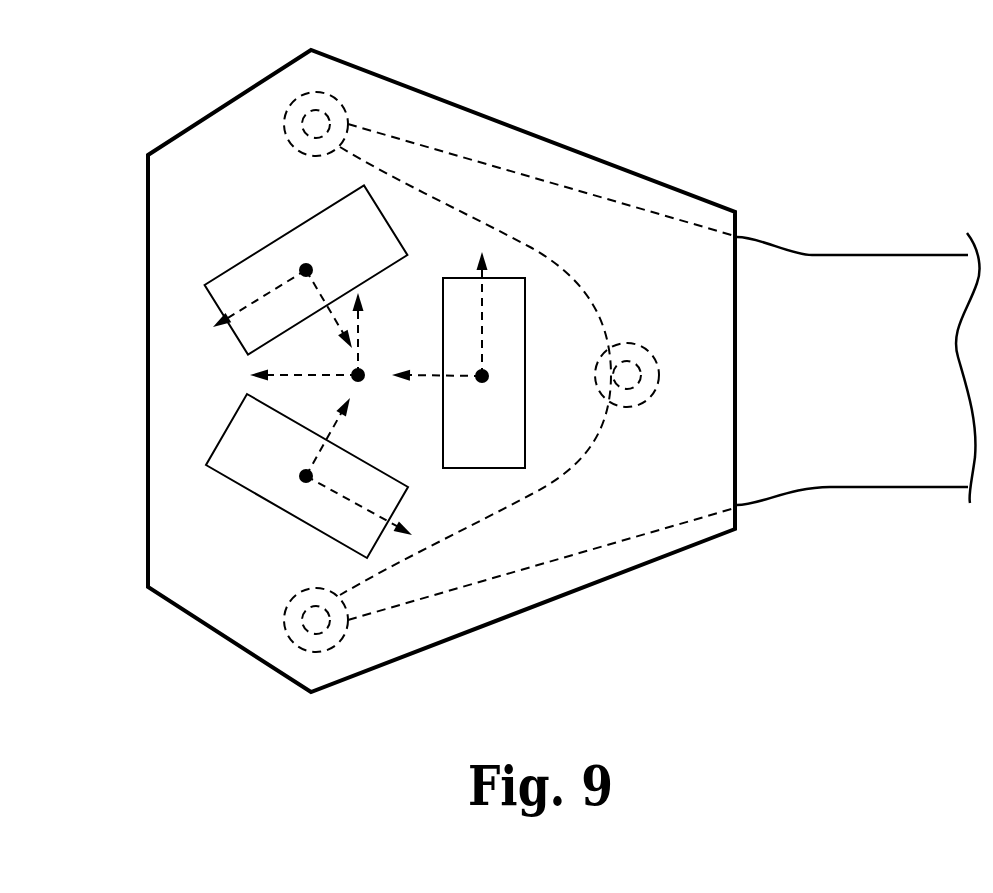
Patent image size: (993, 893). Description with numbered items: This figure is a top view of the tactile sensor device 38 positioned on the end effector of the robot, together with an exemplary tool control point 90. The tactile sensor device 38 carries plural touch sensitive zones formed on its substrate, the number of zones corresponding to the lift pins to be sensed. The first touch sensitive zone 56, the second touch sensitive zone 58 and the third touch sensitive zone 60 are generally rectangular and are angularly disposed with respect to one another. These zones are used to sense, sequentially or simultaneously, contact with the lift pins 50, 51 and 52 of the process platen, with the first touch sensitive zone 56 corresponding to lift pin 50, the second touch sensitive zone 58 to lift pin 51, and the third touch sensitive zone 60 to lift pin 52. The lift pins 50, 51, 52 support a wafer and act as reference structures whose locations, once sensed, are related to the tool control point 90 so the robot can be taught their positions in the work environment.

The tactile sensor device 38 is at (514, 118).
The second touch sensitive zone 58 is at (323, 223).
The lift pin 51 is at (302, 265).
The third touch sensitive zone 60 is at (238, 468).
The lift pin 52 is at (300, 483).
The first touch sensitive zone 56 is at (503, 445).
The lift pin 50 is at (495, 375).
The tool control point 90 is at (363, 381).